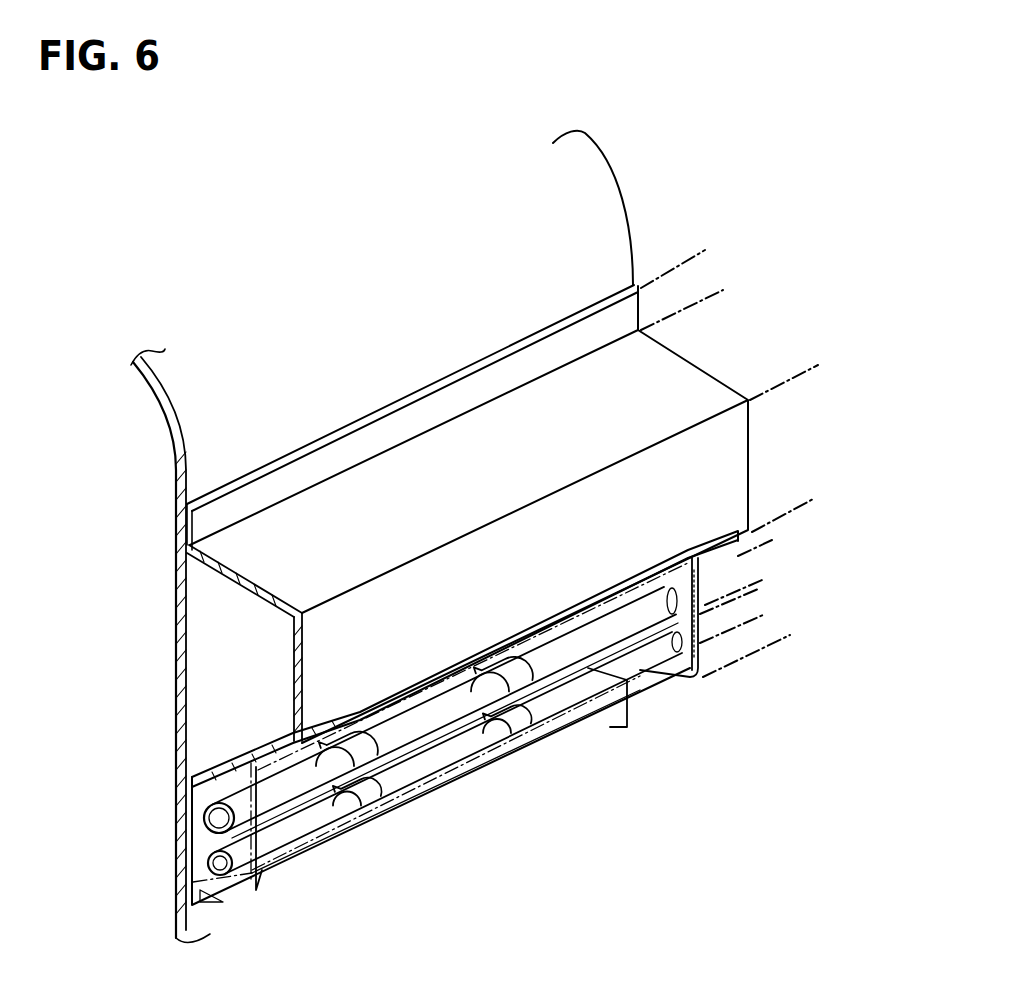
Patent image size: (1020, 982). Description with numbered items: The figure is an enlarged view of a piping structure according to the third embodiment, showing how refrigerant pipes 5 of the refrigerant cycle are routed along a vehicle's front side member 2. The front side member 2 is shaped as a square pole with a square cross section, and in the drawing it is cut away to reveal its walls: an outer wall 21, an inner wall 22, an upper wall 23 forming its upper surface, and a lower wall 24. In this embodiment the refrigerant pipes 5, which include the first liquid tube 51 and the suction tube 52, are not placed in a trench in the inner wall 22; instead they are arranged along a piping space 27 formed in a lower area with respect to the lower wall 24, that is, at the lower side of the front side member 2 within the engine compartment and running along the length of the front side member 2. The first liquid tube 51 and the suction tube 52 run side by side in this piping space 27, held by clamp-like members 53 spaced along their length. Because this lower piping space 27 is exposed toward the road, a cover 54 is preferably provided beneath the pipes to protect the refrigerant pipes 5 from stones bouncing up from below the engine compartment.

The front side member 2 is at (500, 450).
The outer wall 21 is at (210, 628).
The inner wall 22 is at (313, 668).
The upper wall 23 is at (243, 562).
The lower wall 24 is at (217, 762).
The piping space 27 is at (200, 838).
The refrigerant pipes 5 is at (443, 731).
The first liquid tube 51 is at (562, 705).
The suction tube 52 is at (593, 643).
The clamp 53 is at (366, 808).
The cover 54 is at (282, 873).